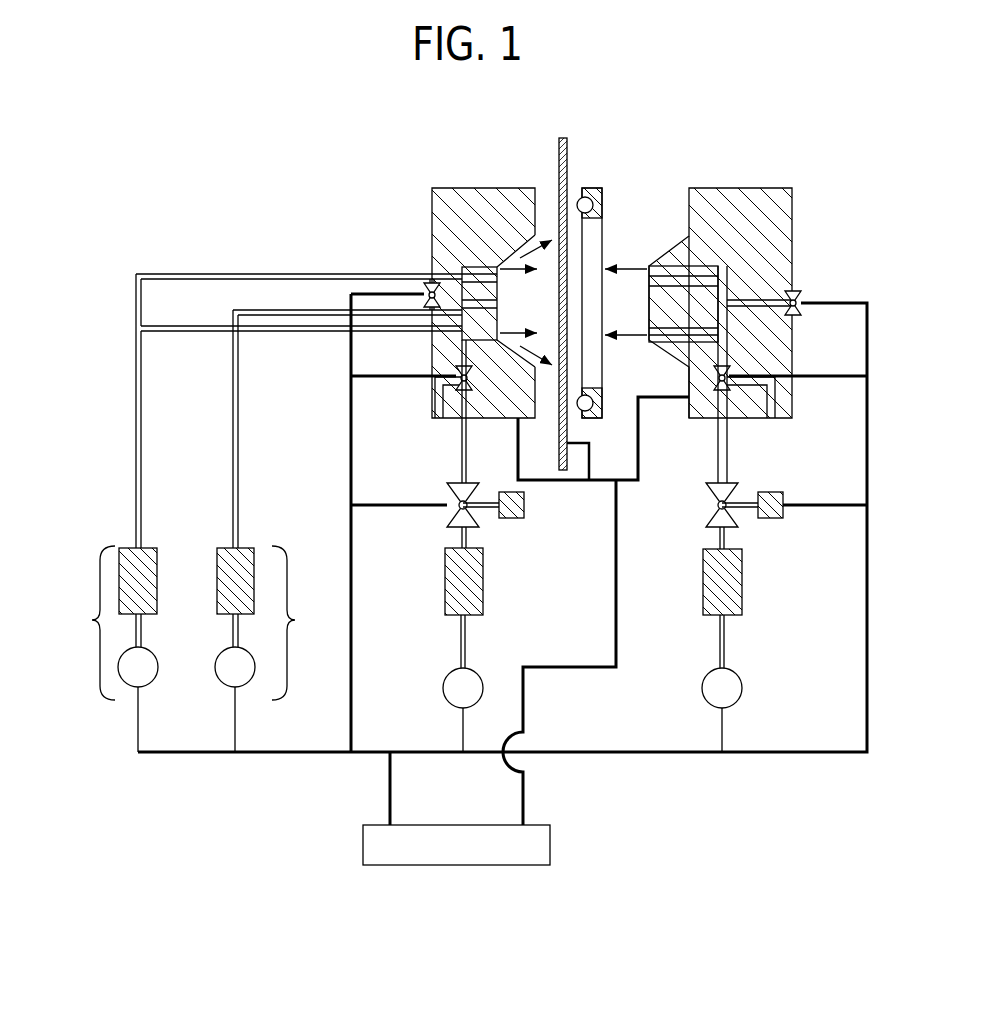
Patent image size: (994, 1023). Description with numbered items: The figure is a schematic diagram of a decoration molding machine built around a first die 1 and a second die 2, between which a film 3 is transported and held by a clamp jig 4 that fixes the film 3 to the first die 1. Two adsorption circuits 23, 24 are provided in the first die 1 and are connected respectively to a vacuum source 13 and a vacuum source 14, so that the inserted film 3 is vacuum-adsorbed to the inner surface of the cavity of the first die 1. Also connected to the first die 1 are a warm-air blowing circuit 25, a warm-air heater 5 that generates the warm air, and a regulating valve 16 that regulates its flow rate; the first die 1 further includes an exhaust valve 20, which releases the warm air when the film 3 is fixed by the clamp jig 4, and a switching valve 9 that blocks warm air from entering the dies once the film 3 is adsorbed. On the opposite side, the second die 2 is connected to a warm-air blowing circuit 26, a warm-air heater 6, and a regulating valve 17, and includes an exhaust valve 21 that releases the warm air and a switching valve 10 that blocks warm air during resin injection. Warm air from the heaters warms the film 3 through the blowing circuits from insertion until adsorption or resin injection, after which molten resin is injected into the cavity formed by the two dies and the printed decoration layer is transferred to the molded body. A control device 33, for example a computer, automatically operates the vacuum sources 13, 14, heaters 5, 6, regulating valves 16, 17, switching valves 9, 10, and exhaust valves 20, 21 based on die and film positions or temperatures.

The first die 1 is at (477, 192).
The second die 2 is at (720, 198).
The film 3 is at (559, 150).
The clamp jig 4 is at (593, 190).
The warm-air heater 5 is at (472, 590).
The warm-air heater 6 is at (730, 590).
The switching valve 9 is at (458, 375).
The switching valve 10 is at (726, 372).
The vacuum source 13 is at (272, 649).
The vacuum source 14 is at (107, 649).
The regulating valve 16 is at (524, 505).
The regulating valve 17 is at (775, 492).
The exhaust valve 20 is at (436, 284).
The exhaust valve 21 is at (800, 294).
The adsorption circuit 23 is at (281, 310).
The adsorption circuit 24 is at (136, 325).
The warm-air blowing circuit 25 is at (462, 462).
The warm-air blowing circuit 26 is at (718, 462).
The control device 33 is at (550, 845).